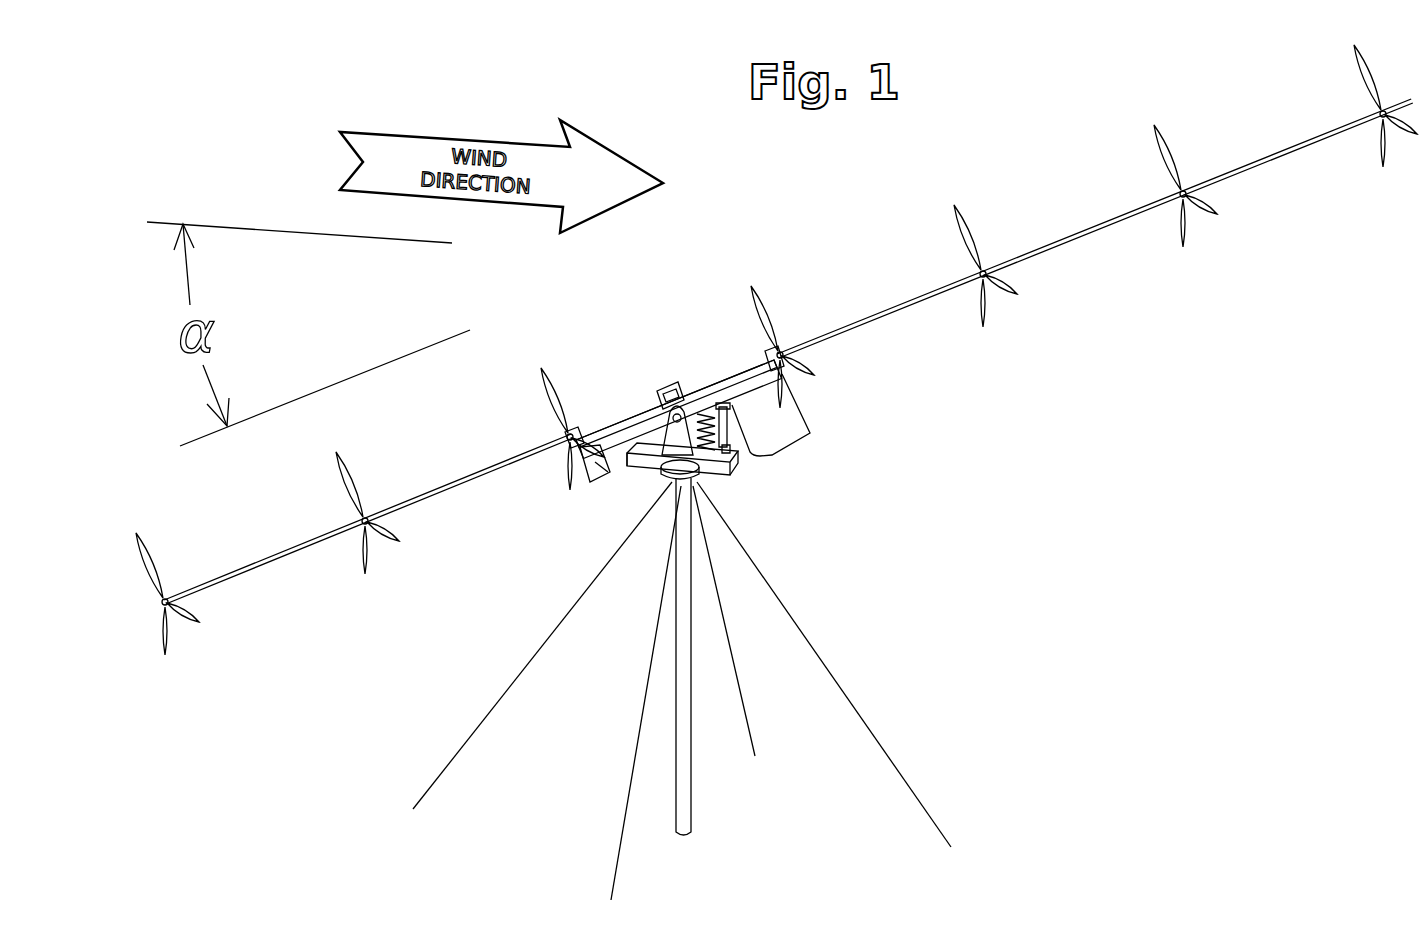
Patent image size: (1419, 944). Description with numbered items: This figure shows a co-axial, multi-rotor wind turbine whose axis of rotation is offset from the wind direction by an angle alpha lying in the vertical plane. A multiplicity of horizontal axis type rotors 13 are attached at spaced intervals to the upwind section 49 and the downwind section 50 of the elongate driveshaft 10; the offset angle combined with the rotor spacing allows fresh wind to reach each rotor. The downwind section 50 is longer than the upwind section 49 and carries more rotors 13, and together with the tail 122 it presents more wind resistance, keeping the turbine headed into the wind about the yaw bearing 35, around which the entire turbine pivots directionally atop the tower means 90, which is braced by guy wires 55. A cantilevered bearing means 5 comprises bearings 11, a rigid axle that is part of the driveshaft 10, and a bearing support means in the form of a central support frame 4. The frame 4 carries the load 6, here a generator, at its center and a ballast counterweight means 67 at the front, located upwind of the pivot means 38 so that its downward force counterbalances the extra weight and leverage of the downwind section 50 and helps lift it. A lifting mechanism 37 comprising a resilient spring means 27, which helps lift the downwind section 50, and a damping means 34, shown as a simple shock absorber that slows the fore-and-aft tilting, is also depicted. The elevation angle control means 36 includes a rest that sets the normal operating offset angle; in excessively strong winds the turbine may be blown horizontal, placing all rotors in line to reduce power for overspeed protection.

The elongate driveshaft 10 is at (1103, 287).
The cantilevered bearing means 5 is at (607, 339).
The central support frame 4 is at (725, 393).
The load 6 is at (672, 392).
The bearing 11 is at (577, 429).
The horizontal axis type rotor 13 is at (1186, 237).
The resilient spring means 27 is at (708, 455).
The damping means 34 is at (732, 433).
The yaw bearing 35 is at (661, 474).
The elevation angle control means 36 is at (620, 460).
The lifting mechanism 37 is at (691, 475).
The pivot means 38 is at (651, 413).
The upwind section of the driveshaft 49 is at (268, 563).
The downwind section of the driveshaft 50 is at (1240, 172).
The guy wire 55 is at (810, 648).
The ballast counterweight means 67 is at (590, 483).
The tower means 90 is at (692, 712).
The tail 122 is at (808, 435).